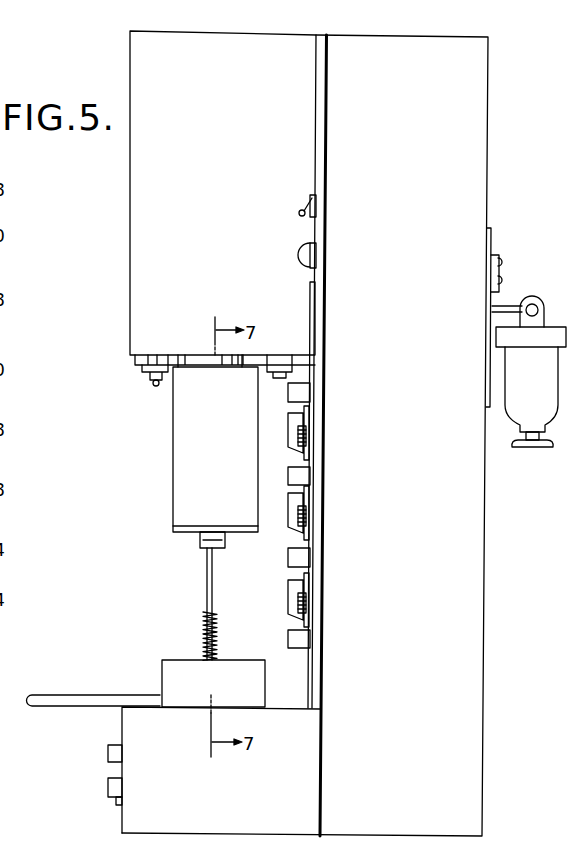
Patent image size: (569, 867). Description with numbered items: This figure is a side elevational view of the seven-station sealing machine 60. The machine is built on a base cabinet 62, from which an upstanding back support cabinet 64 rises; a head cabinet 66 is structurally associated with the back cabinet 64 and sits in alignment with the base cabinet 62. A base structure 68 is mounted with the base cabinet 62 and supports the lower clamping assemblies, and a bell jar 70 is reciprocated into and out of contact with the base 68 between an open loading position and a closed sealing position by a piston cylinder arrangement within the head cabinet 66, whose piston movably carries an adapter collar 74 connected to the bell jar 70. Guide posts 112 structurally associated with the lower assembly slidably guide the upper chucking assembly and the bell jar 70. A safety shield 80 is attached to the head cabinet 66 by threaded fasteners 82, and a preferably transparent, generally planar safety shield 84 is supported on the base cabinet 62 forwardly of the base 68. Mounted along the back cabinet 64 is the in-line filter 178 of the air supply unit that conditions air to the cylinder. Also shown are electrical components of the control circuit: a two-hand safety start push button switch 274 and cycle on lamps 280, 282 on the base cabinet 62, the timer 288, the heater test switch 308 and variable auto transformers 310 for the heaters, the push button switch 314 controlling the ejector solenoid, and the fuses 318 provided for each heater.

The seven-station sealing machine 60 is at (114, 262).
The base cabinet 62 is at (122, 727).
The back support cabinet 64 is at (428, 607).
The head cabinet 66 is at (233, 179).
The base structure 68 is at (161, 670).
The bell jar 70 is at (188, 534).
The adapter collar 74 is at (210, 367).
The safety shield 80 is at (173, 455).
The threaded fasteners 82 is at (160, 380).
The safety shield 84 is at (63, 694).
The guide posts 112 is at (206, 594).
The in-line filter 178 is at (546, 392).
The two-hand safety start push button switch 274 is at (108, 784).
The cycle on lamp 280 is at (298, 256).
The cycle on lamp 282 is at (116, 801).
The timer 288 is at (309, 300).
The heater test switch 308 is at (299, 211).
The variable auto transformer 310 is at (293, 432).
The push button switch 314 is at (108, 753).
The fuse 318 is at (306, 391).